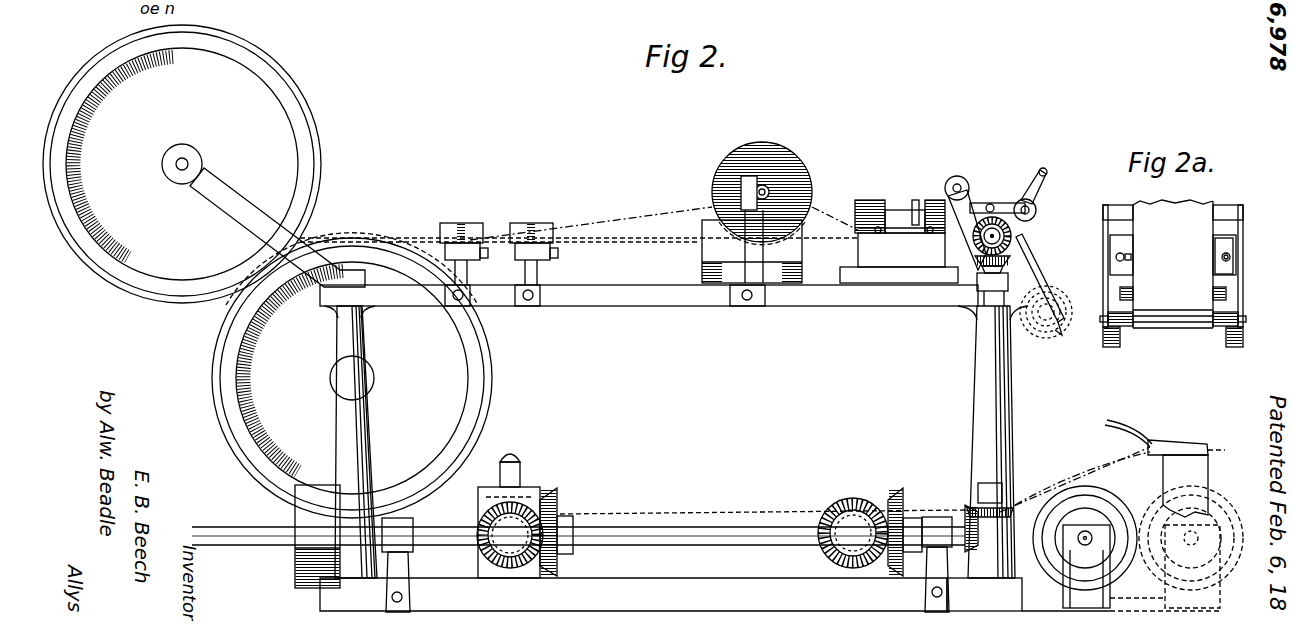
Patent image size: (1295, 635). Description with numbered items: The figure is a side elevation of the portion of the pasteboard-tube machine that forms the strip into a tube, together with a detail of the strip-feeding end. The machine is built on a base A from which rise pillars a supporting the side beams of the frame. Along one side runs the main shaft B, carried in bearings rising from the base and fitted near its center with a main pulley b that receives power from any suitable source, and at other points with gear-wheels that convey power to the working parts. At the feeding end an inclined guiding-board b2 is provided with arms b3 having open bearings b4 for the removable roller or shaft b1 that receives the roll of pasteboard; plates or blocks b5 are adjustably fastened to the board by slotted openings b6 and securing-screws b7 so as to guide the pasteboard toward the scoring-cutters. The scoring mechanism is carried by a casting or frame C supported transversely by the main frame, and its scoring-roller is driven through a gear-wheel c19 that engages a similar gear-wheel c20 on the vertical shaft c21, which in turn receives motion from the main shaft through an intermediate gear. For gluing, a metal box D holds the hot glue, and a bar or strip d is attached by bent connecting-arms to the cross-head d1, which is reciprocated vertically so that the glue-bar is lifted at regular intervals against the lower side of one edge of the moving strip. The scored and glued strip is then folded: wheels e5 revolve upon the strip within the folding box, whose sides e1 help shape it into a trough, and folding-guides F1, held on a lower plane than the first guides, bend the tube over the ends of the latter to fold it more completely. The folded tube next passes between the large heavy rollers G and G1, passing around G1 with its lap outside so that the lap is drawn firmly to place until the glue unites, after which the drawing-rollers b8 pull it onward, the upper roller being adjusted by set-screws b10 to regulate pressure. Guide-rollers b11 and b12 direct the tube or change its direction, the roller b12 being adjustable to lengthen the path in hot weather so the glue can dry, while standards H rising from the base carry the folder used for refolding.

In FIG. 2, the roller G is at (204, 164).
In FIG. 2, the roller G1 is at (352, 375).
In FIG. 2, the pillar a is at (984, 420).
In FIG. 2, the base A is at (1042, 548).
In FIG. 2, the main shaft B is at (262, 525).
In FIG. 2, the main pulley b is at (317, 536).
In FIG. 2, the set-screw b10 is at (511, 463).
In FIG. 2, the drawing-roller b8 is at (512, 525).
In FIG. 2, the roller b11 is at (862, 518).
In FIG. 2, the vertical shaft c21 is at (1000, 383).
In FIG. 2, the gear-wheel c20 is at (977, 276).
In FIG. 2, the casting or frame C is at (1012, 240).
In FIG. 2, the gear-wheel c19 is at (1008, 238).
In FIG. 2, the wheel e5 is at (745, 166).
In FIG. 2, the side e1 is at (752, 241).
In FIG. 2, the metal box D is at (899, 258).
In FIG. 2, the cross-head d1 is at (866, 212).
In FIG. 2, the bar or strip d is at (905, 226).
In FIG. 2, the folding-guide F1 is at (476, 218).
In FIG. 2, the standard H is at (1165, 468).
In FIG. 2, the roller b12 is at (1183, 536).
In FIG. 2A, the plate or block b5 is at (1112, 245).
In FIG. 2A, the arm b3 is at (1108, 302).
In FIG. 2A, the inclined guiding-board b2 is at (1240, 288).
In FIG. 2A, the open bearing b4 is at (1246, 318).
In FIG. 2A, the roller or shaft b1 is at (1243, 328).
In FIG. 2A, the slotted opening b6 is at (1222, 257).
In FIG. 2A, the securing-screw b7 is at (1230, 257).